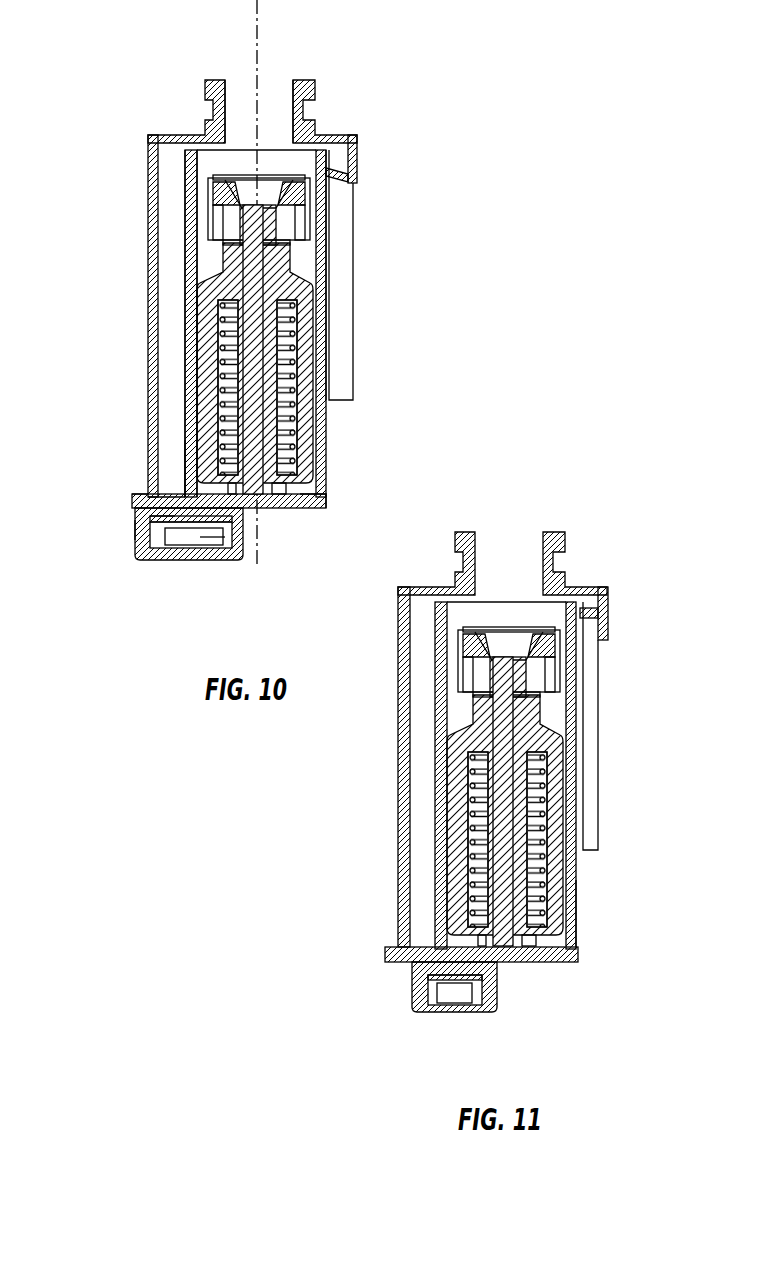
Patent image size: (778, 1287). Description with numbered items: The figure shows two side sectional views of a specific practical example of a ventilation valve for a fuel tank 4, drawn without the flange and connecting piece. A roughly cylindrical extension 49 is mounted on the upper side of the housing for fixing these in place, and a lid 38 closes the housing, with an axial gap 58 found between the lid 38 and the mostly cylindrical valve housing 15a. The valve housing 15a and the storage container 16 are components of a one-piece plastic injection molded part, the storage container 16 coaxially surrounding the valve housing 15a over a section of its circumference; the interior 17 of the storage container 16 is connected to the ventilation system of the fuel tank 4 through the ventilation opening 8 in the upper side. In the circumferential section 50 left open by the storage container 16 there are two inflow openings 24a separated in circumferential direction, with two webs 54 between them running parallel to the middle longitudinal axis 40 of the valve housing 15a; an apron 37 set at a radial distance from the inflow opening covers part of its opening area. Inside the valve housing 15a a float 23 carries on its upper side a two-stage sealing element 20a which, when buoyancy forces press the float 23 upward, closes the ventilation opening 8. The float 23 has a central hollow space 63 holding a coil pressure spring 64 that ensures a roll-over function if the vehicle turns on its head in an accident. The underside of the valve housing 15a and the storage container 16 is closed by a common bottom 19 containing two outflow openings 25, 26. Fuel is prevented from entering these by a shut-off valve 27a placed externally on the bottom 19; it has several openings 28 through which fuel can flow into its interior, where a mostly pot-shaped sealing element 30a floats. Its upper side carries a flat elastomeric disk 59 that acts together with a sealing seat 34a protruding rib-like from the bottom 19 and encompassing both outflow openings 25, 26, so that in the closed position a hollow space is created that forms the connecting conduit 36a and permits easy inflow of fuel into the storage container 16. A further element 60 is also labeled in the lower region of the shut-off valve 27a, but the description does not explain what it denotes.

In FIG. 10, the fuel tank 4 is at (145, 247).
In FIG. 10, the ventilation opening 8 is at (268, 140).
In FIG. 10, the valve housing 15a is at (325, 248).
In FIG. 10, the storage container 16 is at (178, 407).
In FIG. 10, the interior of the storage container 17 is at (177, 330).
In FIG. 10, the bottom 19 is at (300, 497).
In FIG. 10, the sealing element 20a is at (302, 167).
In FIG. 11, the sealing element 20a is at (510, 627).
In FIG. 11, the float 23 is at (560, 860).
In FIG. 11, the inflow openings 24a is at (575, 630).
In FIG. 10, the outflow opening 25 is at (187, 470).
In FIG. 10, the outflow opening 26 is at (165, 500).
In FIG. 10, the shut-off valve 27a is at (140, 568).
In FIG. 11, the shut-off valve 27a is at (412, 1012).
In FIG. 10, the opening 28 is at (208, 548).
In FIG. 10, the sealing element 30a is at (245, 545).
In FIG. 11, the sealing element 30a is at (473, 1007).
In FIG. 10, the sealing seat 34a is at (152, 520).
In FIG. 10, the connecting conduit 36a is at (138, 500).
In FIG. 11, the apron 37 is at (607, 598).
In FIG. 10, the lid 38 is at (165, 135).
In FIG. 10, the middle longitudinal axis 40 is at (262, 283).
In FIG. 10, the cylindrical extension 49 is at (260, 80).
In FIG. 10, the circumferential section 50 is at (330, 210).
In FIG. 11, the circumferential section 50 is at (580, 898).
In FIG. 10, the webs 54 is at (340, 235).
In FIG. 11, the webs 54 is at (588, 688).
In FIG. 10, the axial gap 58 is at (193, 147).
In FIG. 11, the axial gap 58 is at (447, 590).
In FIG. 10, the elastomeric disk 59 is at (240, 521).
In FIG. 10, the seal 60 is at (172, 515).
In FIG. 11, the central hollow space 63 is at (472, 802).
In FIG. 10, the coil pressure spring 64 is at (297, 373).
In FIG. 11, the coil pressure spring 64 is at (545, 805).